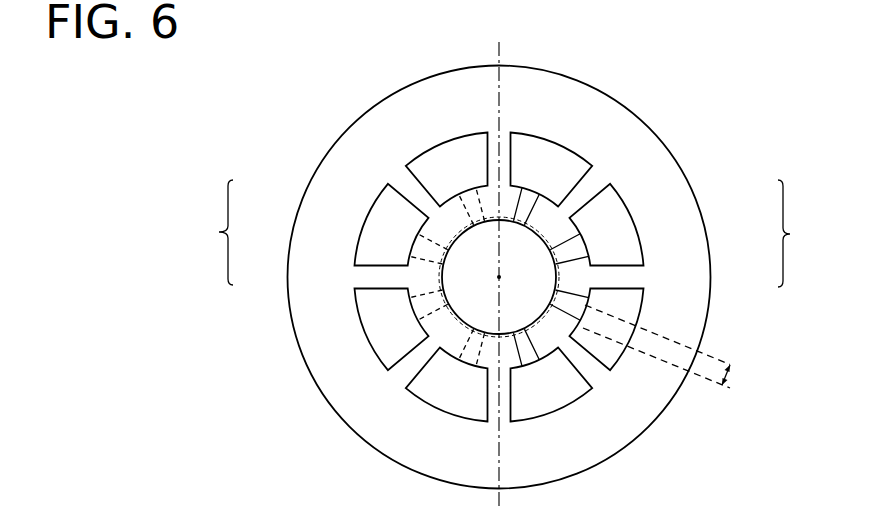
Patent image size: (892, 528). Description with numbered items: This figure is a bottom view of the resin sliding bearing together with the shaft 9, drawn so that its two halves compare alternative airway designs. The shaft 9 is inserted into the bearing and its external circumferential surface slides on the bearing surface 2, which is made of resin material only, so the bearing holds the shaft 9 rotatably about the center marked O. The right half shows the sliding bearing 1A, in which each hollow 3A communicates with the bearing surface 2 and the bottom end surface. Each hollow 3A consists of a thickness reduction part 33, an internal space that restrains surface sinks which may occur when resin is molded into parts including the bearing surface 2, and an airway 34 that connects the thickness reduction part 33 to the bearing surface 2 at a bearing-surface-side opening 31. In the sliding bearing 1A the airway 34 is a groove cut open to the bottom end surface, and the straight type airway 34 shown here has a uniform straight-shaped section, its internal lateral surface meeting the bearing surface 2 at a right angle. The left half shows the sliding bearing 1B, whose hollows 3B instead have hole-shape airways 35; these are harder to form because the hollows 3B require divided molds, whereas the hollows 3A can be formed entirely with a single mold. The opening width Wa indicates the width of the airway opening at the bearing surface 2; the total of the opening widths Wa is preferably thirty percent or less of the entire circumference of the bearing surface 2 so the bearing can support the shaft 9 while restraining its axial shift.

The sliding bearing 1A is at (711, 68).
The sliding bearing 1B is at (289, 68).
The bearing surface 2 is at (537, 236).
The shaft 9 is at (482, 242).
The bearing-surface-side opening 31 is at (522, 214).
The thickness reduction part 33 is at (627, 308).
The airway 34 is at (572, 308).
The hole-shape airway 35 is at (428, 300).
The hollow 3A is at (802, 233).
The hollow 3B is at (207, 232).
The opening width Wa is at (676, 351).
The center axis O is at (510, 278).